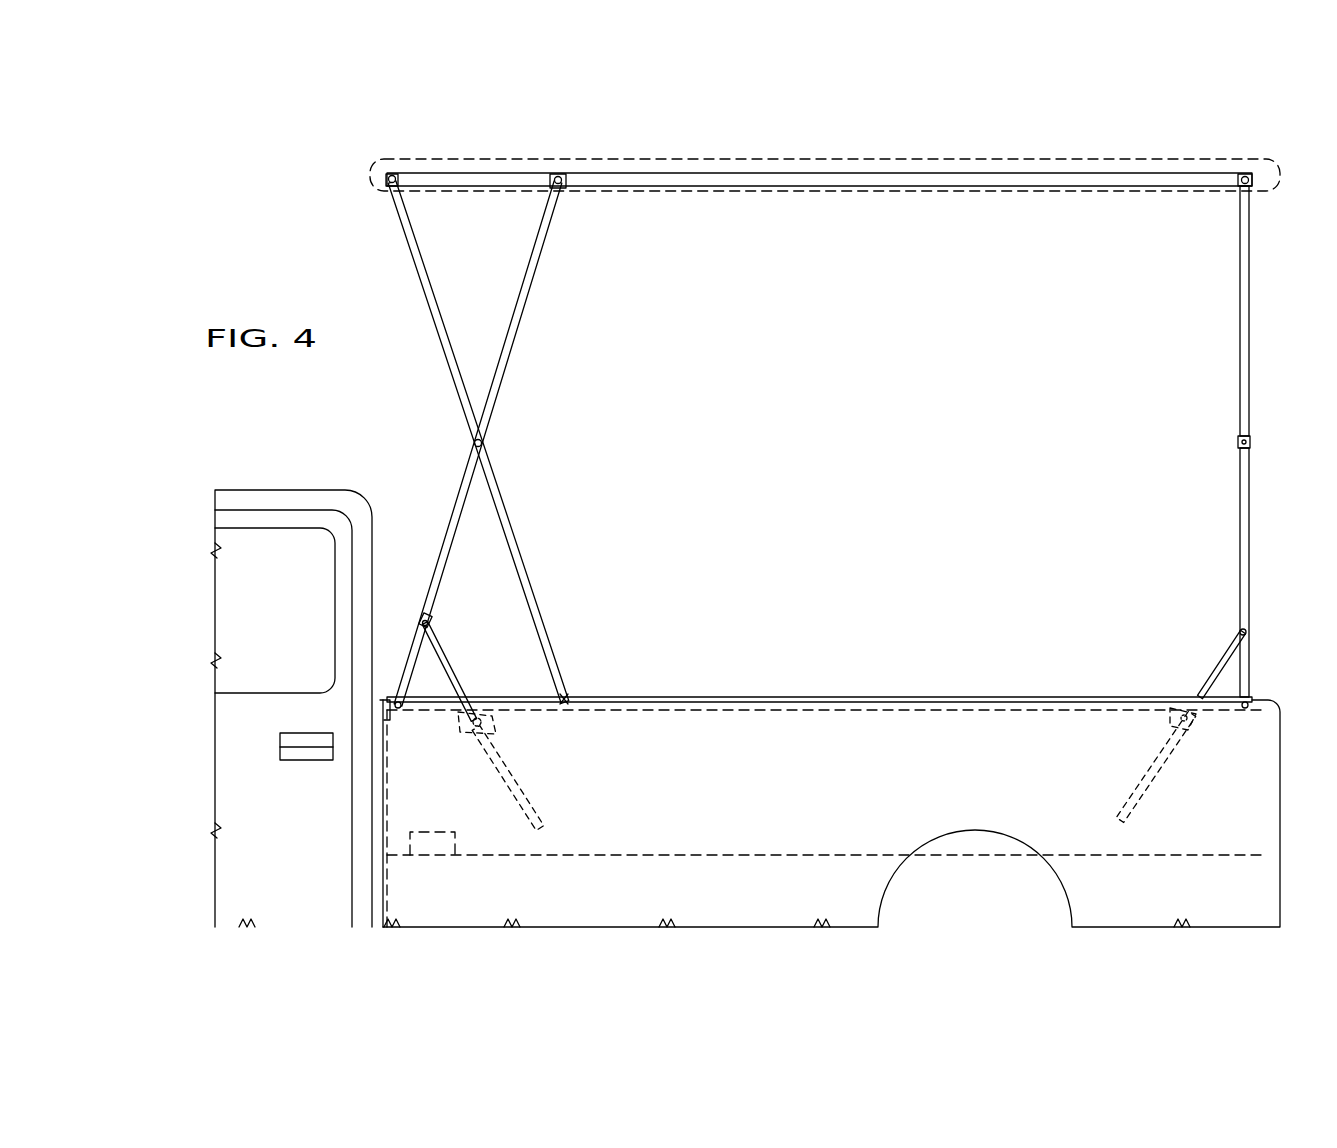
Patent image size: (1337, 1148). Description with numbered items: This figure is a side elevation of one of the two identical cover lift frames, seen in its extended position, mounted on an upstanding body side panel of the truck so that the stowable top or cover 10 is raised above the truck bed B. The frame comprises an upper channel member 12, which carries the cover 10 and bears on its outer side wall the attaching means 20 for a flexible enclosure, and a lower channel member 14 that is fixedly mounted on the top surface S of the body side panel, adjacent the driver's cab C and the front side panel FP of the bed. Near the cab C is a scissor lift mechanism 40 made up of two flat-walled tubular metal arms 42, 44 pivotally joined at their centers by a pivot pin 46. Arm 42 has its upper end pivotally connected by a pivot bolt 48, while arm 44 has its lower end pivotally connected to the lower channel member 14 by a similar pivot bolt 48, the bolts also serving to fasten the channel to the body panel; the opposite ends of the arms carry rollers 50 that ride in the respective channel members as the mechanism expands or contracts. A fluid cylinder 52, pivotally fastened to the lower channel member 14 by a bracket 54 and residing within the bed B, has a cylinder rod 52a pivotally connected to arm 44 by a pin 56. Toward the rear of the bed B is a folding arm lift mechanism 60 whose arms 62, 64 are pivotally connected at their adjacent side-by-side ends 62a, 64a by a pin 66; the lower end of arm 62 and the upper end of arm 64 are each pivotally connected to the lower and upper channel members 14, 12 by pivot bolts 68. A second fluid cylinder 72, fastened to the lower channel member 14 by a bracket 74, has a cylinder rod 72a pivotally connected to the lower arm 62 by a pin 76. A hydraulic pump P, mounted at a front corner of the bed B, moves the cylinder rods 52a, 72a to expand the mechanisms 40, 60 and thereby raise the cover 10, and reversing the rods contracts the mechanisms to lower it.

The stowable top or cover 10 is at (495, 150).
The upper channel member 12 is at (883, 187).
The lower channel member 14 is at (900, 696).
The attaching means 20 is at (1158, 174).
The scissor lift mechanism 40 is at (494, 444).
The scissor arm 42 is at (510, 526).
The scissor arm 44 is at (530, 285).
The pivot pin 46 is at (482, 442).
The pivot bolt 48 is at (390, 185).
The rollers 50 is at (566, 185).
The fluid cylinder 52 is at (546, 830).
The cylinder rod 52a is at (454, 660).
The bracket 54 is at (498, 722).
The pin 56 is at (428, 623).
The folding arm lift mechanism 60 is at (1236, 441).
The lower arm 62 is at (1236, 510).
The end of arm 62a is at (1249, 492).
The upper arm 64 is at (1235, 294).
The end of arm 64a is at (1248, 420).
The pin 66 is at (1250, 442).
The pivot bolt 68 is at (1250, 184).
The fluid cylinder 72 is at (1160, 776).
The cylinder rod 72a is at (1218, 665).
The bracket 74 is at (1174, 718).
The pin 76 is at (1246, 630).
The truck bed B is at (1254, 853).
The driver's cab C is at (298, 487).
The front side panel FP is at (376, 714).
The hydraulic pump P is at (440, 855).
The top surface S is at (775, 710).